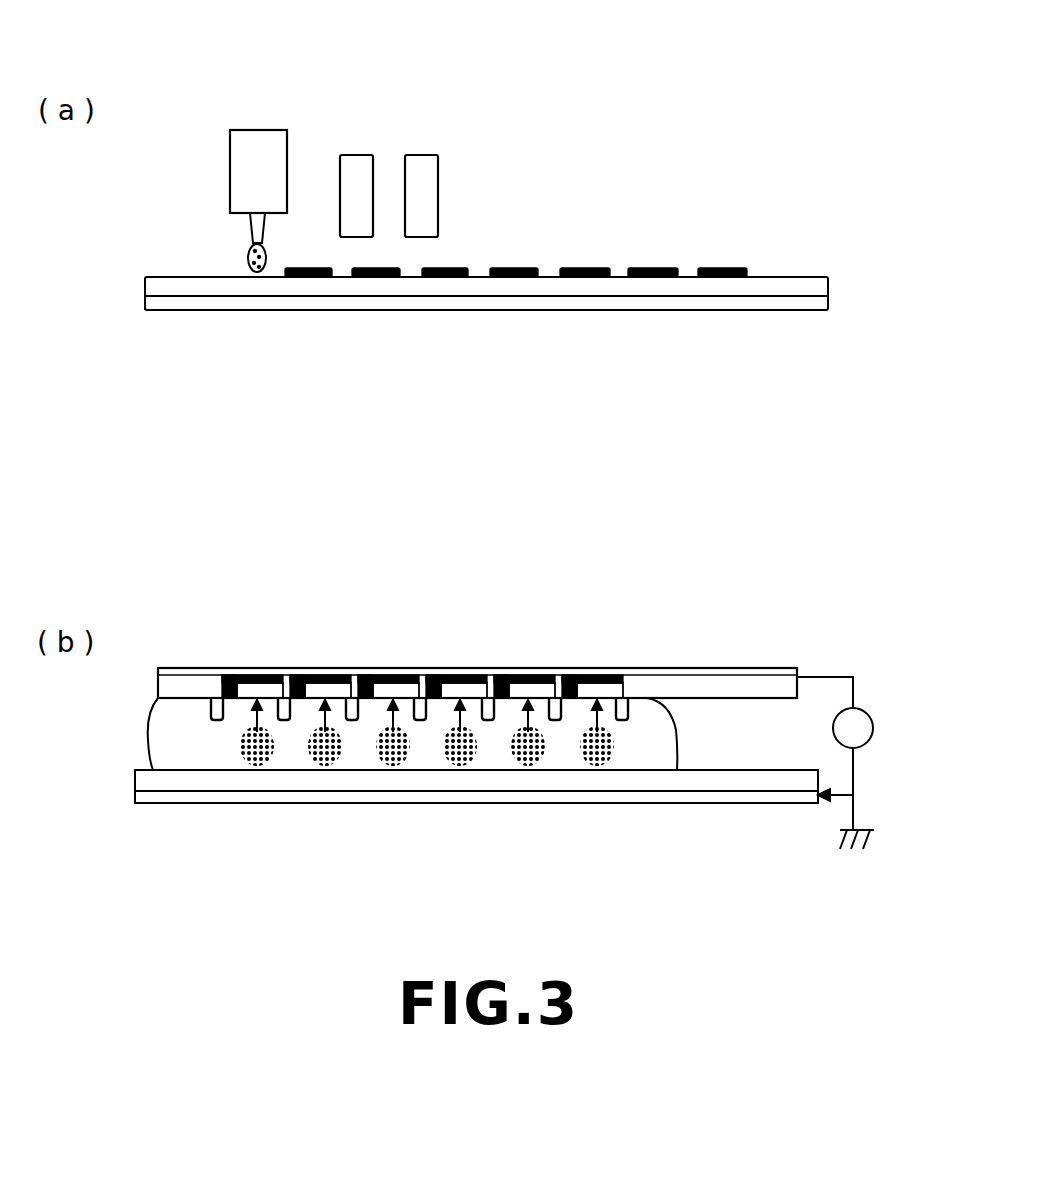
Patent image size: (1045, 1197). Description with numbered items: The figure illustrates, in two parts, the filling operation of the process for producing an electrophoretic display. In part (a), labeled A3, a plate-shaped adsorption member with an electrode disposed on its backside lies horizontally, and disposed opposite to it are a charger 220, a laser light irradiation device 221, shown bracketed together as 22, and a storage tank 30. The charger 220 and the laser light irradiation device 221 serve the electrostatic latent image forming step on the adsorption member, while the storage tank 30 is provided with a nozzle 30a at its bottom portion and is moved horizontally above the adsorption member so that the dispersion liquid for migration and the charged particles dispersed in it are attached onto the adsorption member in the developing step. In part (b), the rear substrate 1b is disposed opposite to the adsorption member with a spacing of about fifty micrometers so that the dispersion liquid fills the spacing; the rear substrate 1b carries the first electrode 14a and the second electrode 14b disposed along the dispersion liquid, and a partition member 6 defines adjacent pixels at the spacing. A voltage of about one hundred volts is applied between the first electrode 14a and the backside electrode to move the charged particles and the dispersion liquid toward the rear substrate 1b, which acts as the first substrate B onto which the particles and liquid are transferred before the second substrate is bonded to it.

The head unit 22 is at (397, 118).
The laser light irradiation device 221 is at (357, 177).
The charger 220 is at (422, 177).
The storage tank 30 is at (247, 147).
The nozzle 30a is at (248, 232).
The process step A3 is at (852, 203).
The rear substrate 1b is at (708, 668).
The first electrode 14a is at (422, 624).
The second electrode 14b is at (400, 621).
The first substrate B is at (528, 667).
The partition member 6 is at (152, 724).